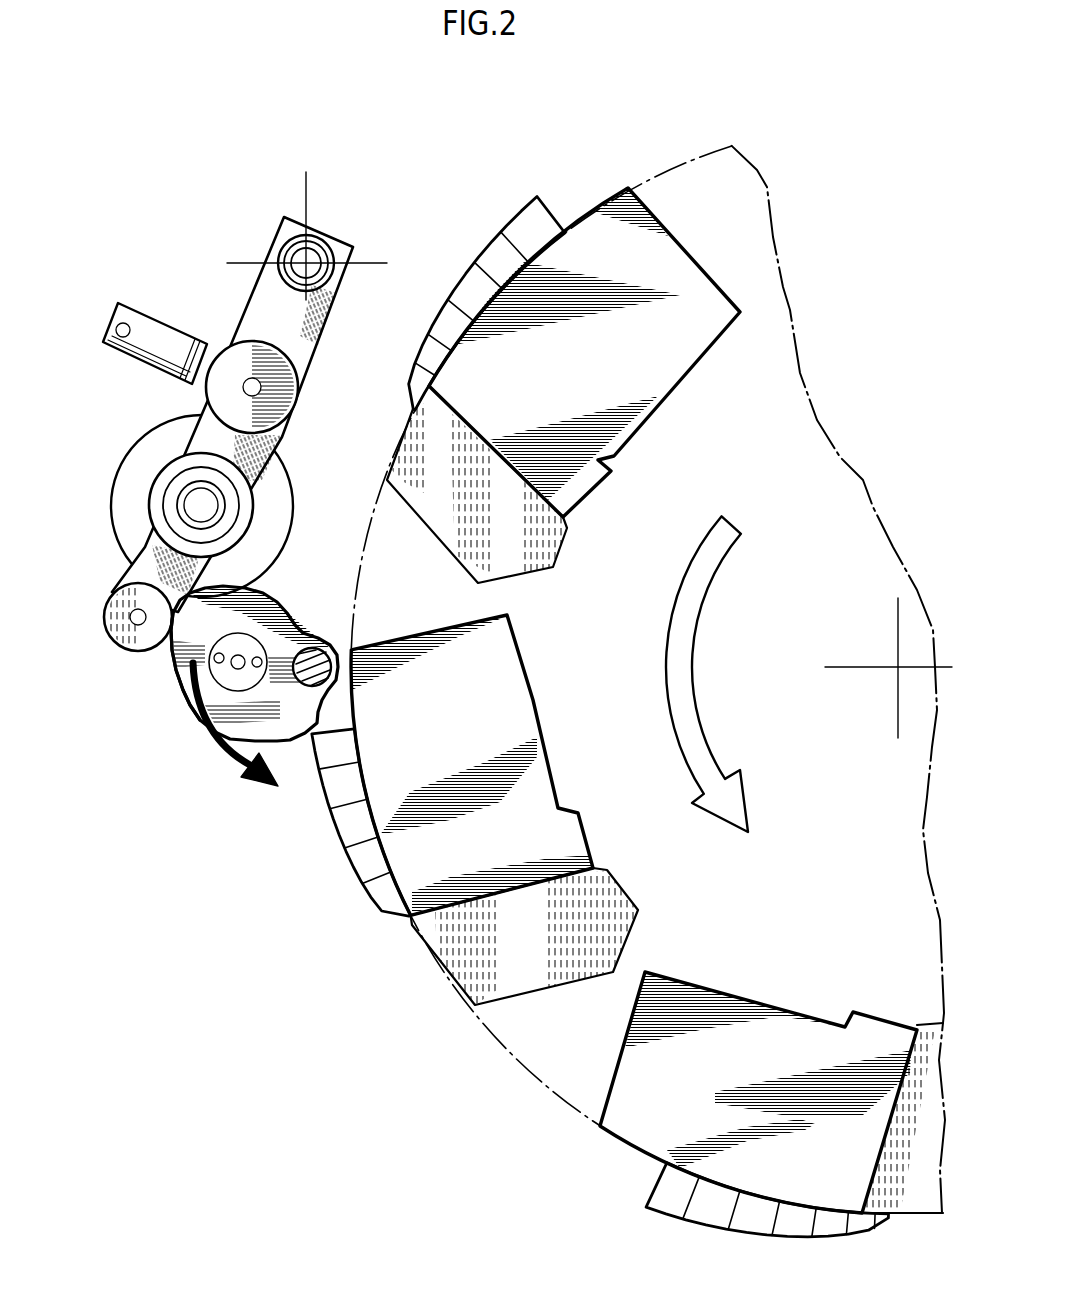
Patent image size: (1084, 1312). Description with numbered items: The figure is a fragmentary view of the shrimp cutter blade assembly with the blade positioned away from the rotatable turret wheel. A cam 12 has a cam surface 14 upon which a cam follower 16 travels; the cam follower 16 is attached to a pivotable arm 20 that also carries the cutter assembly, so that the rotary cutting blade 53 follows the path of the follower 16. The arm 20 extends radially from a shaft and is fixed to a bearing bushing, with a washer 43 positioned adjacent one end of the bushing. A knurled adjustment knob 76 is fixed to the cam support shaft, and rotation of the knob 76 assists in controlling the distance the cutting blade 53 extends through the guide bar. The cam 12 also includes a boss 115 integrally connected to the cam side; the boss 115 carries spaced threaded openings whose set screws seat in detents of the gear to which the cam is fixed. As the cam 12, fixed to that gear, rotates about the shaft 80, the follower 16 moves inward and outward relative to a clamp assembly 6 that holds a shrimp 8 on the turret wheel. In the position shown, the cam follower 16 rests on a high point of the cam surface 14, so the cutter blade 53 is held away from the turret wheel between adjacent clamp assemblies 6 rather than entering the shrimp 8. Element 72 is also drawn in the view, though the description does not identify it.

The clamp assembly 6 is at (665, 229).
The shrimp 8 is at (537, 212).
The cam 12 is at (263, 608).
The cam surface 14 is at (173, 672).
The cam follower 16 is at (133, 651).
The pivotable arm 20 is at (140, 548).
The washer 43 is at (311, 252).
The rotary cutting blade 53 is at (147, 437).
The actuating rod 72 is at (153, 318).
The knurled adjustment knob 76 is at (232, 414).
The shaft 80 is at (310, 650).
The boss 115 is at (233, 690).